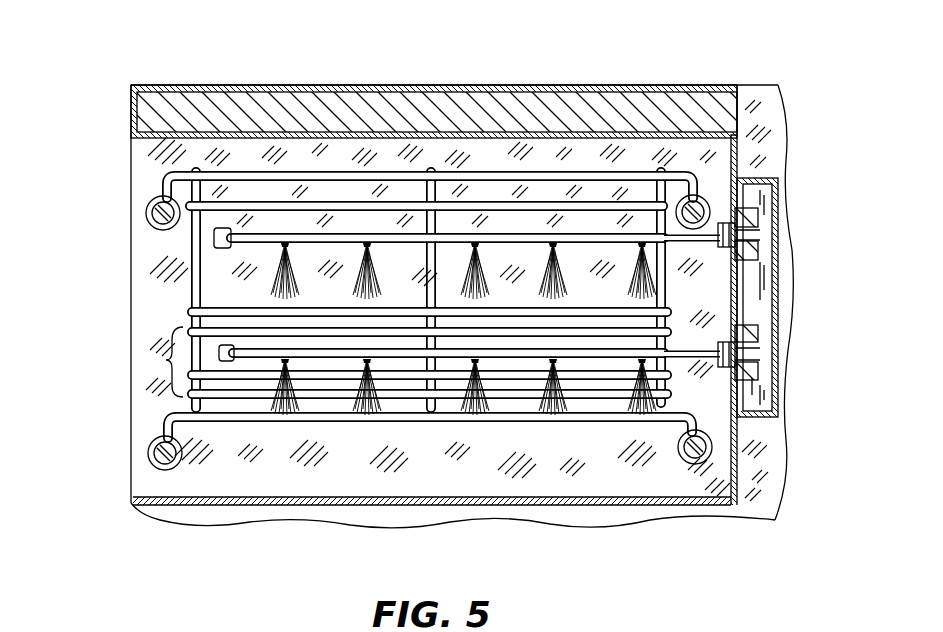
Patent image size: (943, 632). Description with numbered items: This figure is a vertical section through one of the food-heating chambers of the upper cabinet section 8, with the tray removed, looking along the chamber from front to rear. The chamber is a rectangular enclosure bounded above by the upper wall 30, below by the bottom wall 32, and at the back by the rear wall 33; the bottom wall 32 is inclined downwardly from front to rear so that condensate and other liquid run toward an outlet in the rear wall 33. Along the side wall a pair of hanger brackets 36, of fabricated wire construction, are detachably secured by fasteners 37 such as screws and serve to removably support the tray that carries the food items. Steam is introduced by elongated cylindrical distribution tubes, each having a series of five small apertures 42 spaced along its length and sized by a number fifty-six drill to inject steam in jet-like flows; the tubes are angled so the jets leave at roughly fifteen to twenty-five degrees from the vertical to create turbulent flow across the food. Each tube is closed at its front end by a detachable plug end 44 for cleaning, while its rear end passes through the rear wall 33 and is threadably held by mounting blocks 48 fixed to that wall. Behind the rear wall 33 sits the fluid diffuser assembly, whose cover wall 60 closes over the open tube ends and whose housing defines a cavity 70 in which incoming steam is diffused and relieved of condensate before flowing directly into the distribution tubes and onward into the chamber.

The upper cabinet section 8 is at (322, 88).
The upper wall 30 is at (503, 140).
The bottom wall 32 is at (538, 492).
The rear wall 33 is at (738, 150).
The hanger brackets 36 is at (168, 360).
The fasteners 37 is at (153, 202).
The apertures 42 is at (232, 247).
The detachable plug end 44 is at (215, 237).
The mounting blocks 48 is at (748, 207).
The cover wall 60 is at (785, 288).
The cavity 70 is at (757, 277).